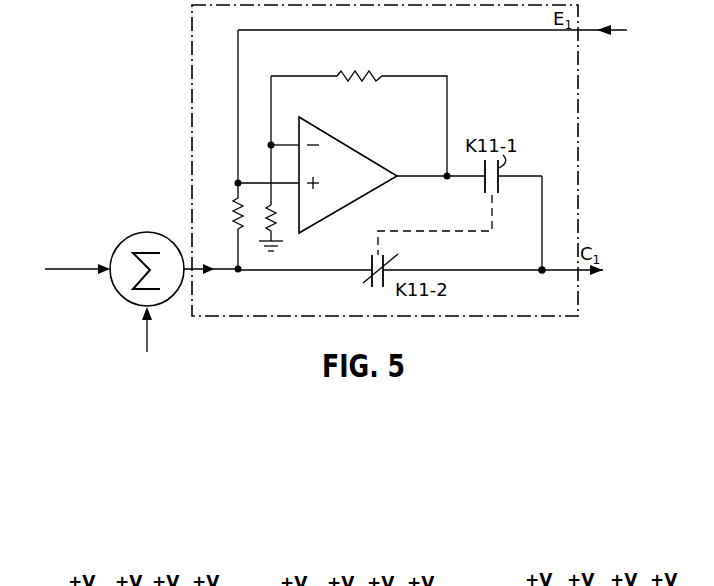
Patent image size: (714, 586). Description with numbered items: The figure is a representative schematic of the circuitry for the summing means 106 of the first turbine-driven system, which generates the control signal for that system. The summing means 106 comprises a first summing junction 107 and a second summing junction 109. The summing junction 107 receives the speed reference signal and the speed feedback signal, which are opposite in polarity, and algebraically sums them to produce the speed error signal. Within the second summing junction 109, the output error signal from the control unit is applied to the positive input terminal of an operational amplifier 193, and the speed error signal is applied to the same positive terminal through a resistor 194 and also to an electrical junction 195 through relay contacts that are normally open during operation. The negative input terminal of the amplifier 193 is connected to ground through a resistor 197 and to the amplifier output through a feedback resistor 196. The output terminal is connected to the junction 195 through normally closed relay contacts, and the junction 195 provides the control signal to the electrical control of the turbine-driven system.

The summing means 106 is at (121, 107).
The first summing junction 107 is at (124, 302).
The second summing junction 109 is at (523, 112).
The operational amplifier 193 is at (347, 207).
The resistor 194 is at (232, 232).
The electrical junction 195 is at (540, 273).
The feedback resistor 196 is at (366, 80).
The resistor 197 is at (278, 232).